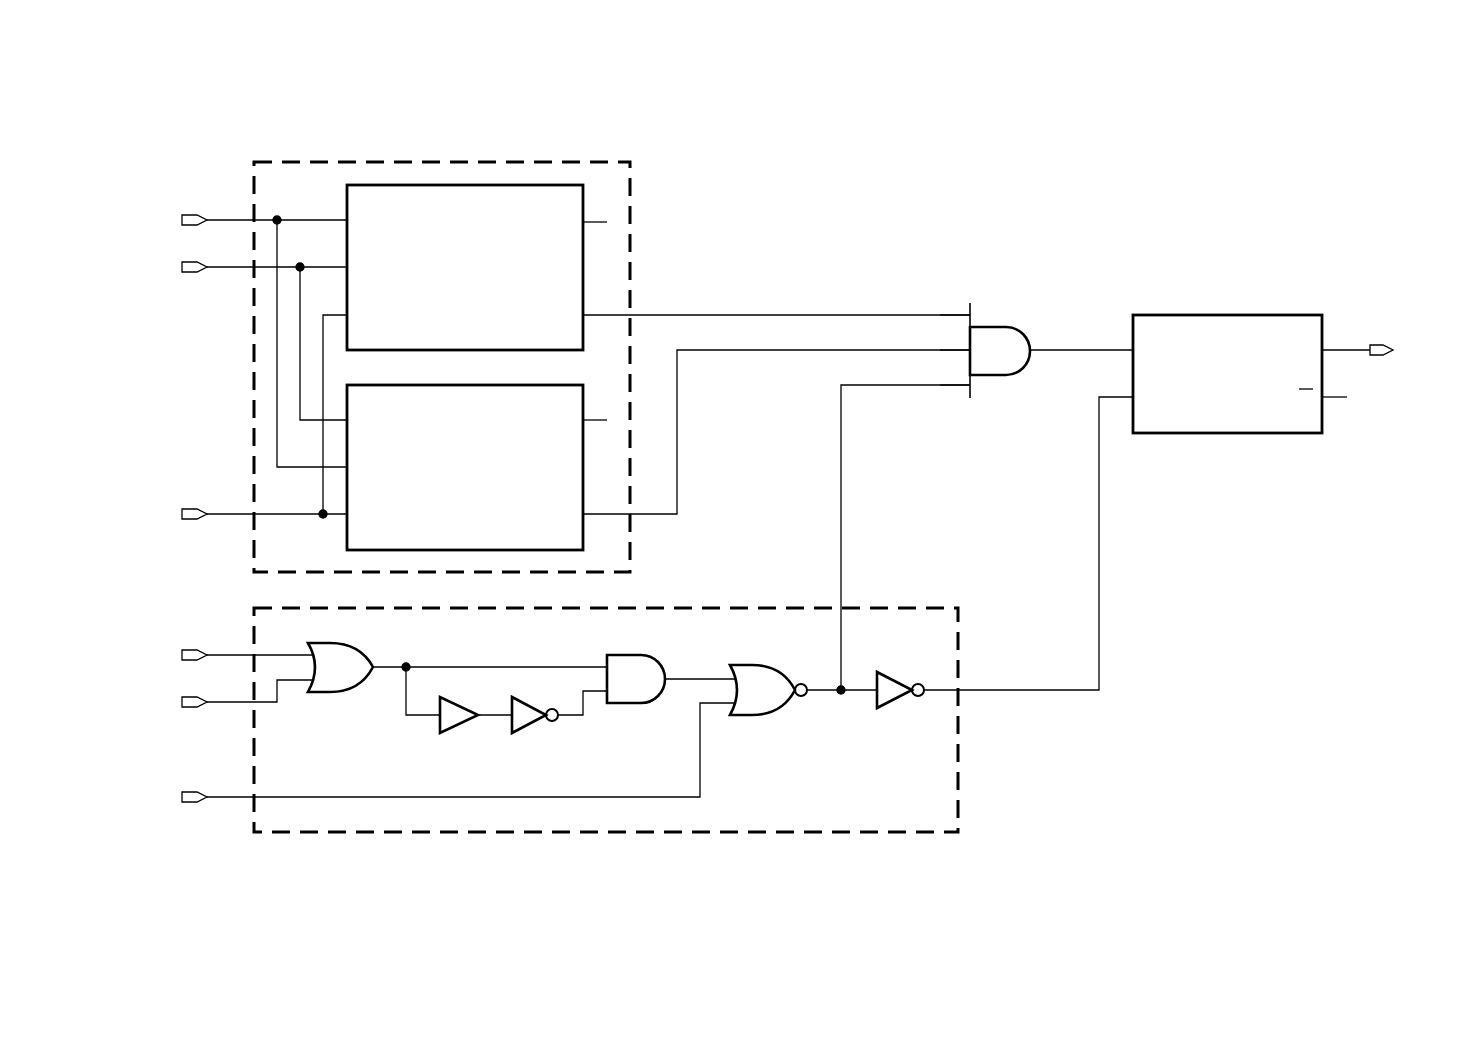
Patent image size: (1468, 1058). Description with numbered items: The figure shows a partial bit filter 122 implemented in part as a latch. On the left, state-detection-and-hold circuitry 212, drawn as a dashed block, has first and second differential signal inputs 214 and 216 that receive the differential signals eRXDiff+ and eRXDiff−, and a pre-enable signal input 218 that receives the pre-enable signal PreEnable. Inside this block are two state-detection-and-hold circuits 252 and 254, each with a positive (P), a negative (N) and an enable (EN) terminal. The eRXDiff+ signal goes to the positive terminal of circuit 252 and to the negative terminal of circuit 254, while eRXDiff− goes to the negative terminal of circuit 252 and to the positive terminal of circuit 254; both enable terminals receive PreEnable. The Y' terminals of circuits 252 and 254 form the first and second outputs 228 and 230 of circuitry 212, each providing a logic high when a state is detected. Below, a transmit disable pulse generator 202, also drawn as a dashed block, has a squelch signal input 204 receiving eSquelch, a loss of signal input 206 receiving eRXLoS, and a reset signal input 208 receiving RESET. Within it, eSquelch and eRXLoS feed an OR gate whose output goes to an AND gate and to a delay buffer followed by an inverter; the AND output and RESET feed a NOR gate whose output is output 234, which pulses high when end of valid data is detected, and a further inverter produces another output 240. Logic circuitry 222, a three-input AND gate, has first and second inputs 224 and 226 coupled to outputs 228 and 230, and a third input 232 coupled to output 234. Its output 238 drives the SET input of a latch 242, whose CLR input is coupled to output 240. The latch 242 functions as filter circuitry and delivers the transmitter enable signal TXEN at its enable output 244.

The partial bit filter 122 is at (940, 116).
The transmit disable pulse generator 202 is at (786, 832).
The squelch signal input 204 is at (247, 653).
The loss of signal input 206 is at (247, 707).
The reset signal input 208 is at (247, 802).
The state-detection-and-hold circuitry 212 is at (372, 161).
The first differential signal input 214 is at (247, 216).
The second differential signal input 216 is at (247, 272).
The pre-enable signal input 218 is at (247, 511).
The logic circuitry 222 is at (988, 326).
The first input of logic circuitry 224 is at (968, 306).
The second input of logic circuitry 226 is at (963, 355).
The first output of state-detection-and-hold circuitry 228 is at (640, 312).
The second output of state-detection-and-hold circuitry 230 is at (640, 518).
The third input of logic circuitry 232 is at (963, 393).
The output of transmit disable pulse generator 234 is at (845, 601).
The output of logic circuitry 238 is at (1032, 356).
The another output of transmit disable pulse generator 240 is at (962, 686).
The latch 242 is at (1228, 314).
The enable output 244 is at (1330, 343).
The state-detection-and-hold circuit 252 is at (445, 316).
The state-detection-and-hold circuit 254 is at (445, 516).